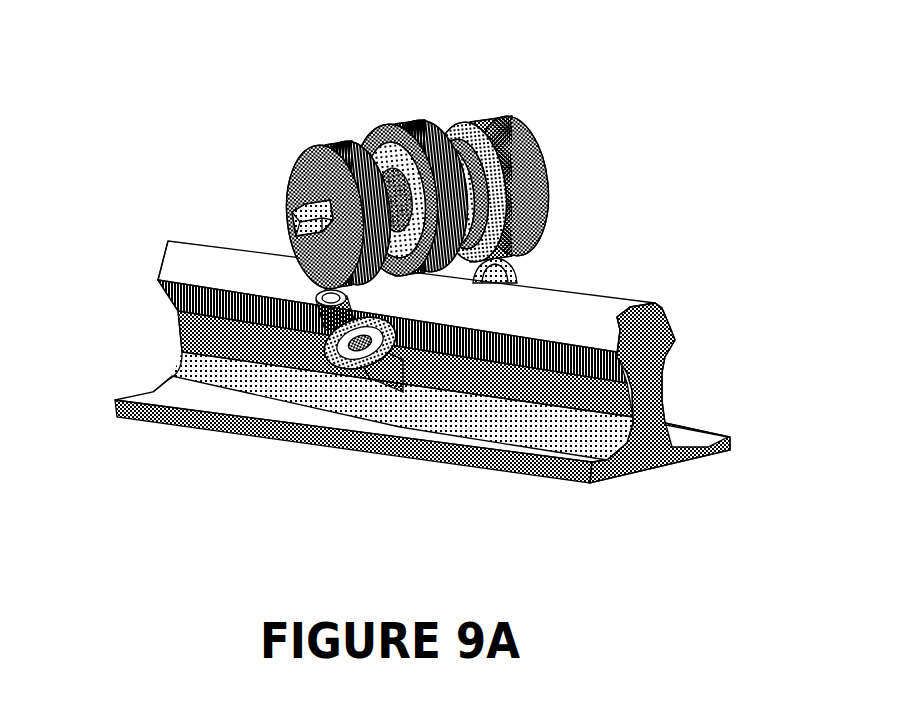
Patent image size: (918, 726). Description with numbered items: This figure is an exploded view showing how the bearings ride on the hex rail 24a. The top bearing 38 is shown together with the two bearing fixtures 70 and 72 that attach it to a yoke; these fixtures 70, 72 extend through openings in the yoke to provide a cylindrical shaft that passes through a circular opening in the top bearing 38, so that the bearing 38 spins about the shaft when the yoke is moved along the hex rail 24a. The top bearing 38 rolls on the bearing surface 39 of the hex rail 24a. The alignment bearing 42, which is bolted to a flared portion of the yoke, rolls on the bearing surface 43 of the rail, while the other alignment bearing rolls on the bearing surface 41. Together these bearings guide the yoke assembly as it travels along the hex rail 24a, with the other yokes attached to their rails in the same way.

The hex rail 24a is at (448, 348).
The top bearing 38 is at (412, 125).
The bearing surface 39 is at (602, 302).
The bearing surface 41 is at (670, 358).
The alignment bearing 42 is at (352, 383).
The bearing surface 43 is at (172, 302).
The bearing fixture 70 is at (298, 162).
The bearing fixture 72 is at (527, 158).